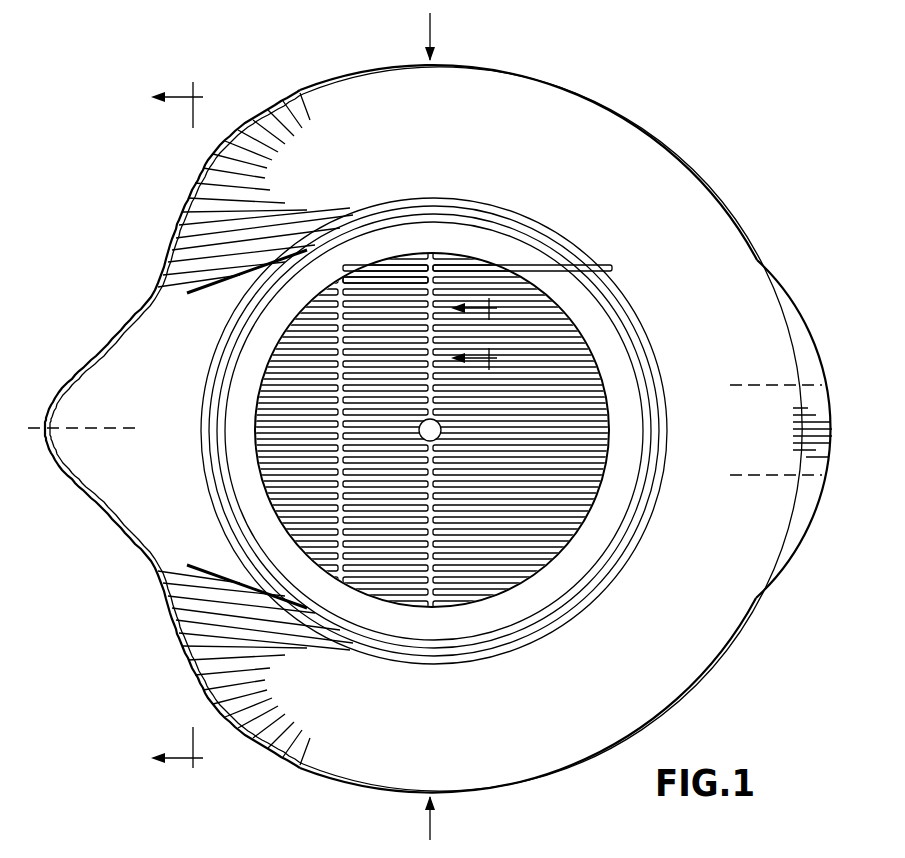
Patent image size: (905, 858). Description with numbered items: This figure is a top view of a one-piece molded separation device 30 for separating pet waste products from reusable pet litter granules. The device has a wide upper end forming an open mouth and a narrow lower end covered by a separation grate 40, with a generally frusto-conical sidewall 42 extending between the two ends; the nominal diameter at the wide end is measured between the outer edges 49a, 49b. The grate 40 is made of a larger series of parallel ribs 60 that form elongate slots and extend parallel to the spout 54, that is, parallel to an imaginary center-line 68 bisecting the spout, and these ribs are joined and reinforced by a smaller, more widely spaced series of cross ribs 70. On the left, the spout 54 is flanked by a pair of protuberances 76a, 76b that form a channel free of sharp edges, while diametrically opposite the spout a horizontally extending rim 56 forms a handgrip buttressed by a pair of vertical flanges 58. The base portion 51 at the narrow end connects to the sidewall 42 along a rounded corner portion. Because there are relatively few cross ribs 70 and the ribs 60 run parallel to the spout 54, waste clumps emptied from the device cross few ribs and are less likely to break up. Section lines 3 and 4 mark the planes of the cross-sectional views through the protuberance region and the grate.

The separation device 30 is at (696, 141).
The sidewall 42 is at (688, 622).
The rim 56 is at (809, 343).
The vertical flanges 58 is at (756, 388).
The spout 54 is at (70, 488).
The center-line 68 is at (100, 430).
The protuberance 76a is at (189, 283).
The protuberance 76b is at (189, 575).
The base portion 51 is at (553, 585).
The separation grate 40 is at (454, 615).
The ribs 60 is at (405, 288).
The cross ribs 70 is at (498, 273).
The outer edge 49a is at (432, 31).
The outer edge 49b is at (432, 826).
The section line 3- 3 is at (177, 427).
The section line 4- 4 is at (480, 333).